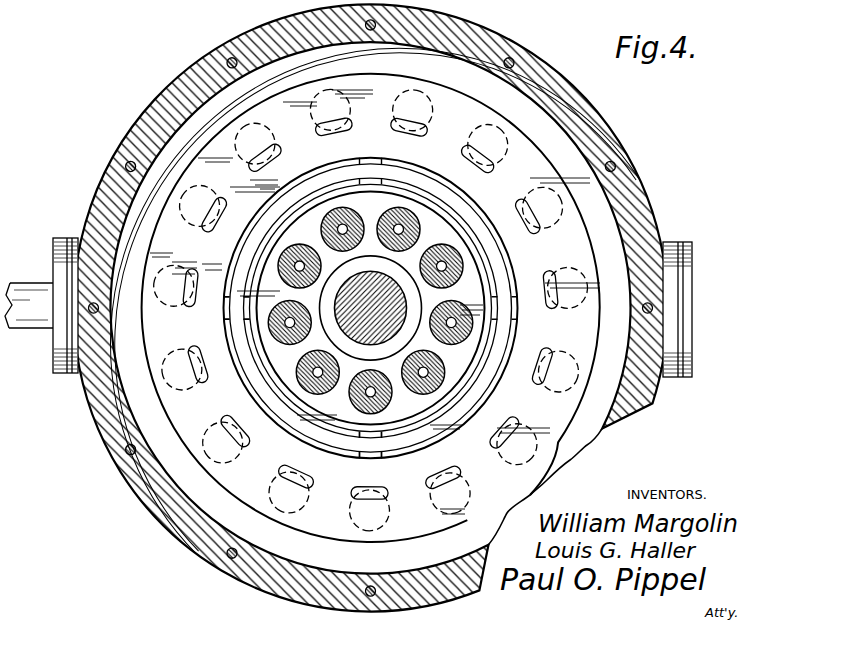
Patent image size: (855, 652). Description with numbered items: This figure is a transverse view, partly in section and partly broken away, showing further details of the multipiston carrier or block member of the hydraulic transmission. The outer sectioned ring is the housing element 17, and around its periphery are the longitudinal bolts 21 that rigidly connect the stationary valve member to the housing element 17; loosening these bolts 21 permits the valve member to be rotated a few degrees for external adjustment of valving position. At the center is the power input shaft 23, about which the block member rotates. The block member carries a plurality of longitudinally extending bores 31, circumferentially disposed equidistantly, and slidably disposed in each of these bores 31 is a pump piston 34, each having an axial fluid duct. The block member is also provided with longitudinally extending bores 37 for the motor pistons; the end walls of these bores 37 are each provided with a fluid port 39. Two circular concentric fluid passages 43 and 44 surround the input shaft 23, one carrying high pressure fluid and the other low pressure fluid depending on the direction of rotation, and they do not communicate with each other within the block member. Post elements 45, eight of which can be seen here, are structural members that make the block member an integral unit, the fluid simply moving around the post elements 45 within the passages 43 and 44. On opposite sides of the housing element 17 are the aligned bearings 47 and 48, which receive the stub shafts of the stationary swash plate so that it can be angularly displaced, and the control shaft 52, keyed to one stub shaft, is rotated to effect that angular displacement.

The housing element 17 is at (165, 100).
The longitudinal bolts 21 is at (513, 62).
The power input shaft 23 is at (405, 303).
The bores 31 is at (312, 226).
The pump piston 34 is at (447, 250).
The bores 37 is at (427, 124).
The fluid port 39 is at (224, 417).
The fluid passage 43 is at (333, 191).
The fluid passage 44 is at (346, 165).
The post elements 45 is at (246, 317).
The bearing 47 is at (62, 237).
The bearing 48 is at (678, 243).
The control shaft 52 is at (25, 283).